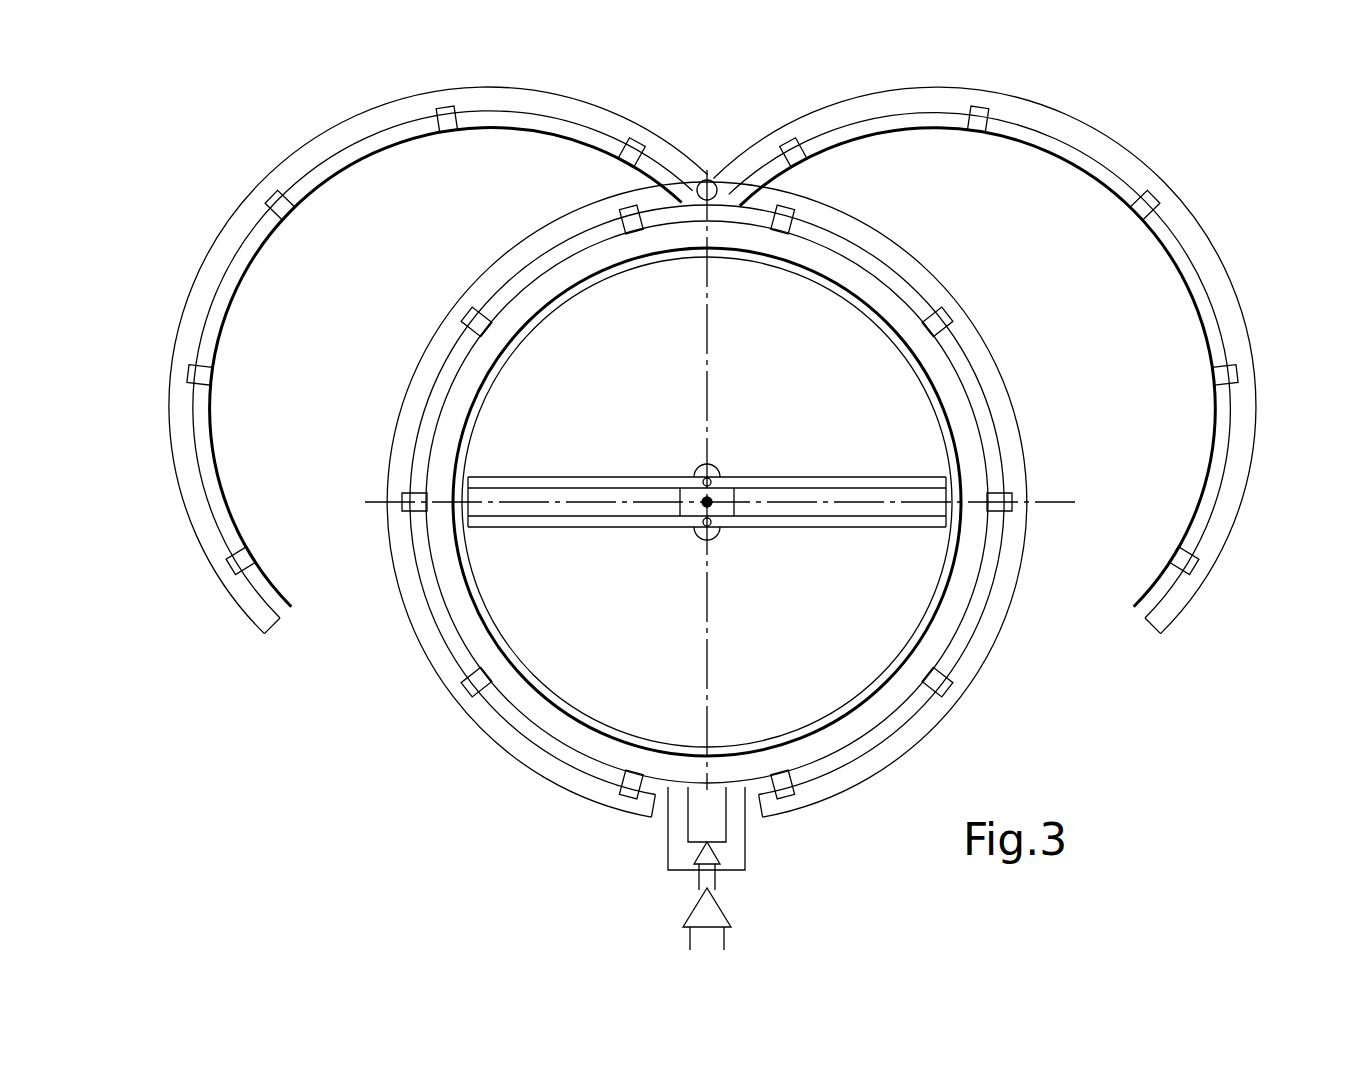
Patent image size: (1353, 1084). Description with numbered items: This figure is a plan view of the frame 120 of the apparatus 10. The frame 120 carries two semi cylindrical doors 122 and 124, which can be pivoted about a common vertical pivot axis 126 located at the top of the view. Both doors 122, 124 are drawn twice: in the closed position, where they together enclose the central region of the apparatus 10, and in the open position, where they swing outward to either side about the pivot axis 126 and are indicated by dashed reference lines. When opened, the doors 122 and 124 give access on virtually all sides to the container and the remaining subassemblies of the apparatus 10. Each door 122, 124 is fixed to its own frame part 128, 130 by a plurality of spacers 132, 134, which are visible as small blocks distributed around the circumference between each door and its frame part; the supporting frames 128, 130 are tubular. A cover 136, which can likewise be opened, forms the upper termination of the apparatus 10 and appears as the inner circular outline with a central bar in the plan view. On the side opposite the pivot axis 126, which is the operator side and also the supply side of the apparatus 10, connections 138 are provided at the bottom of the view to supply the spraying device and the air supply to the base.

The apparatus 10 is at (218, 180).
The frame 120 is at (360, 718).
The semi cylindrical door 122 is at (445, 395).
The semi cylindrical door 124 is at (985, 412).
The vertical pivot axis 126 is at (709, 180).
The frame part 128 is at (410, 607).
The frame part 130 is at (985, 640).
The spacers 132 is at (470, 316).
The spacers 134 is at (940, 318).
The cover 136 is at (605, 678).
The connections 138 is at (640, 860).